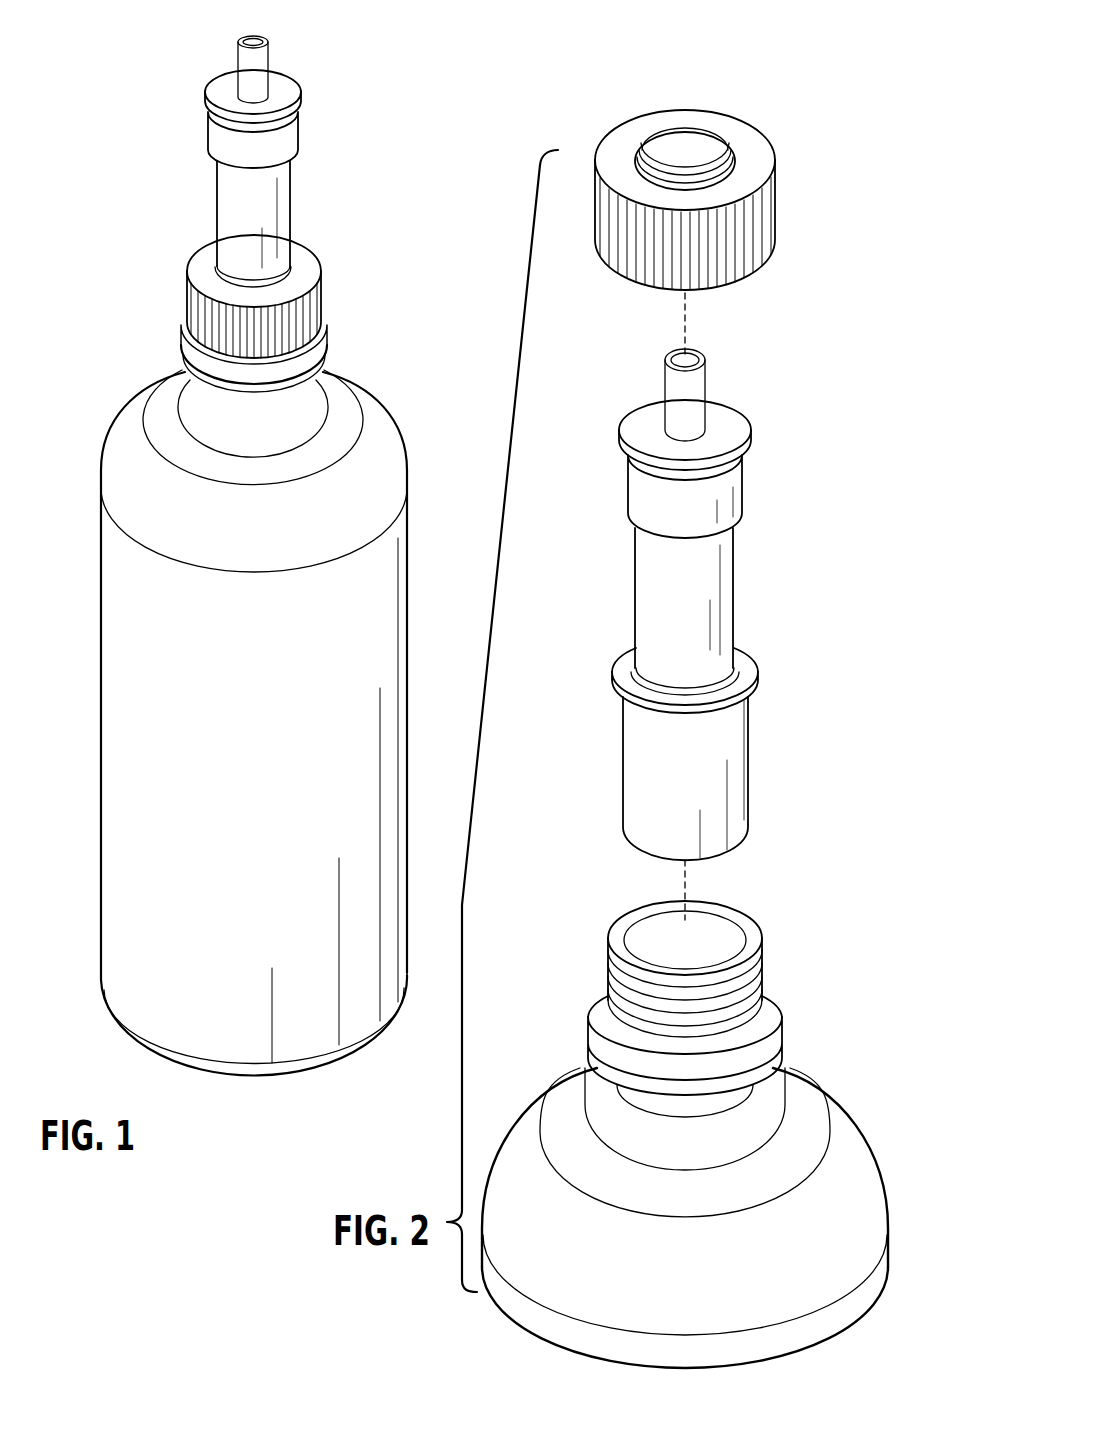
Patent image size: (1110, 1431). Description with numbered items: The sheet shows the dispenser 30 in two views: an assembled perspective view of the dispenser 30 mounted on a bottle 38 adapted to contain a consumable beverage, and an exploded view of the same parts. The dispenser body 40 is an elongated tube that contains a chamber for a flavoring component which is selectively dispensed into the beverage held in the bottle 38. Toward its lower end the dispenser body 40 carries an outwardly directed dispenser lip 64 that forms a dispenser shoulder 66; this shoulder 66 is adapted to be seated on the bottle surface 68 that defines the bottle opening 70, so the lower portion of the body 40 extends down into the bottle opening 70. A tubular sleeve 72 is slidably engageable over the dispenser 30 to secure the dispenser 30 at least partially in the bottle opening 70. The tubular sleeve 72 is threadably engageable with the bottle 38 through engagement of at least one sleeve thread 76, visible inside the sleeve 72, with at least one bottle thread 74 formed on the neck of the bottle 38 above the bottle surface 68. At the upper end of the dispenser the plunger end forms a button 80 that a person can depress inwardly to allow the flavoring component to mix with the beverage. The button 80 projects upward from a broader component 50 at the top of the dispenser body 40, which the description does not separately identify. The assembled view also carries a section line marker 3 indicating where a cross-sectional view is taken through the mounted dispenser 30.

In FIG. 1, the dispenser 30 is at (320, 208).
In FIG. 2, the dispenser 30 is at (766, 605).
In FIG. 1, the bottle 38 is at (238, 731).
In FIG. 2, the bottle 38 is at (685, 1121).
In FIG. 1, the dispenser body 40 is at (280, 185).
In FIG. 2, the dispenser body 40 is at (718, 572).
In FIG. 1, the cap 50 is at (222, 88).
In FIG. 2, the cap 50 is at (635, 483).
In FIG. 2, the dispenser lip 64 is at (747, 668).
In FIG. 2, the dispenser shoulder 66 is at (750, 697).
In FIG. 2, the bottle surface 68 is at (745, 958).
In FIG. 2, the bottle opening 70 is at (708, 937).
In FIG. 1, the tubular sleeve 72 is at (197, 307).
In FIG. 2, the tubular sleeve 72 is at (721, 179).
In FIG. 2, the bottle thread 74 is at (760, 978).
In FIG. 2, the sleeve thread 76 is at (683, 160).
In FIG. 1, the button 80 is at (260, 63).
In FIG. 2, the button 80 is at (698, 388).
In FIG. 1, the section line 3 is at (88, 177).